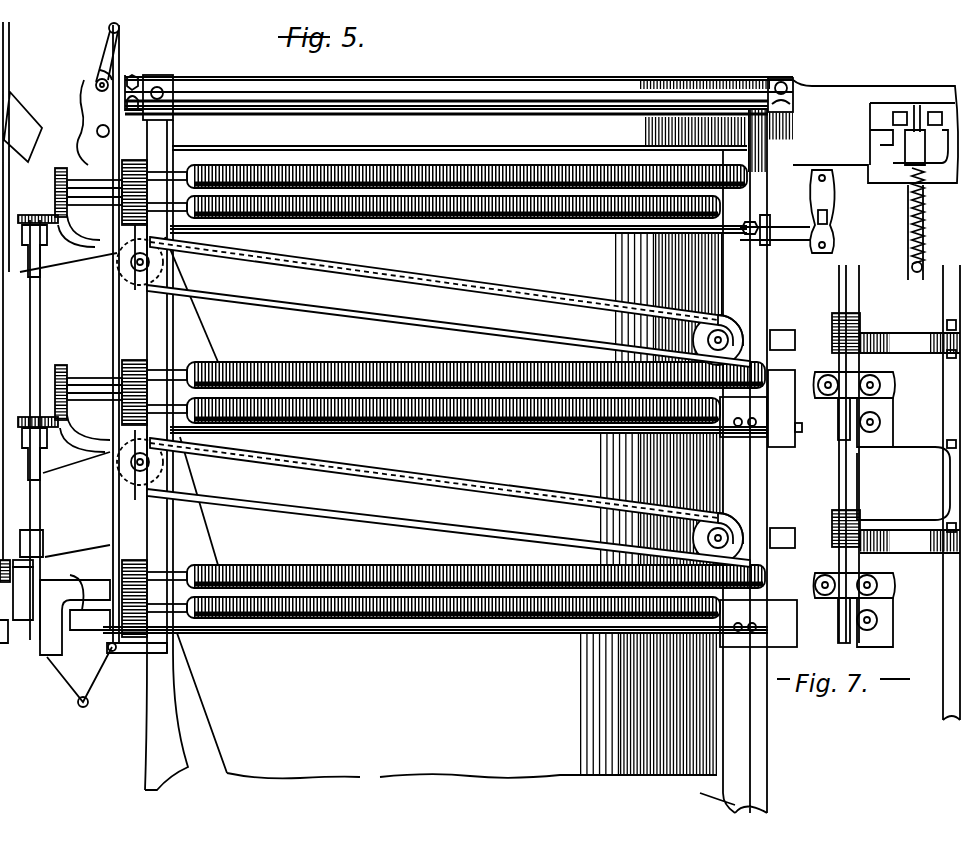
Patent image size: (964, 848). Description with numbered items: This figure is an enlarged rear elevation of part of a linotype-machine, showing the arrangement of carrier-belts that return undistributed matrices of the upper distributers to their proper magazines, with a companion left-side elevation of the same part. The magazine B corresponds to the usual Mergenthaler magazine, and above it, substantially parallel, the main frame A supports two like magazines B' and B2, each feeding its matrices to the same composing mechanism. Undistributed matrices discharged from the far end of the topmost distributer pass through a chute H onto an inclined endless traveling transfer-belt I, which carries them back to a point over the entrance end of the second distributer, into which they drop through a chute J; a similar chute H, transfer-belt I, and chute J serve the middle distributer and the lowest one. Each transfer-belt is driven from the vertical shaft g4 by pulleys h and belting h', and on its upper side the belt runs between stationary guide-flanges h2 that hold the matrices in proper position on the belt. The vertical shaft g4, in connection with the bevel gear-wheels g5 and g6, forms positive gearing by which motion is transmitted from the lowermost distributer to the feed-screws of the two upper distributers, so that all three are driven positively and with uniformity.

In FIG. 5, the bevel gear-wheel g6 is at (47, 553).
In FIG. 5, the bevel gear-wheel g5 is at (40, 213).
In FIG. 5, the pulley h is at (46, 430).
In FIG. 5, the belting h' is at (68, 405).
In FIG. 5, the vertical shaft g4 is at (45, 323).
In FIG. 5, the chute H is at (197, 253).
In FIG. 5, the inclined endless traveling transfer-belt I is at (292, 302).
In FIG. 7, the inclined endless traveling transfer-belt I is at (857, 362).
In FIG. 5, the stationary guide-flange h2 is at (398, 270).
In FIG. 5, the magazine B2 is at (444, 299).
In FIG. 5, the magazine B' is at (451, 501).
In FIG. 5, the magazine B is at (447, 705).
In FIG. 5, the chute J is at (748, 353).
In FIG. 7, the chute J is at (870, 572).
In FIG. 7, the main frame A is at (953, 473).